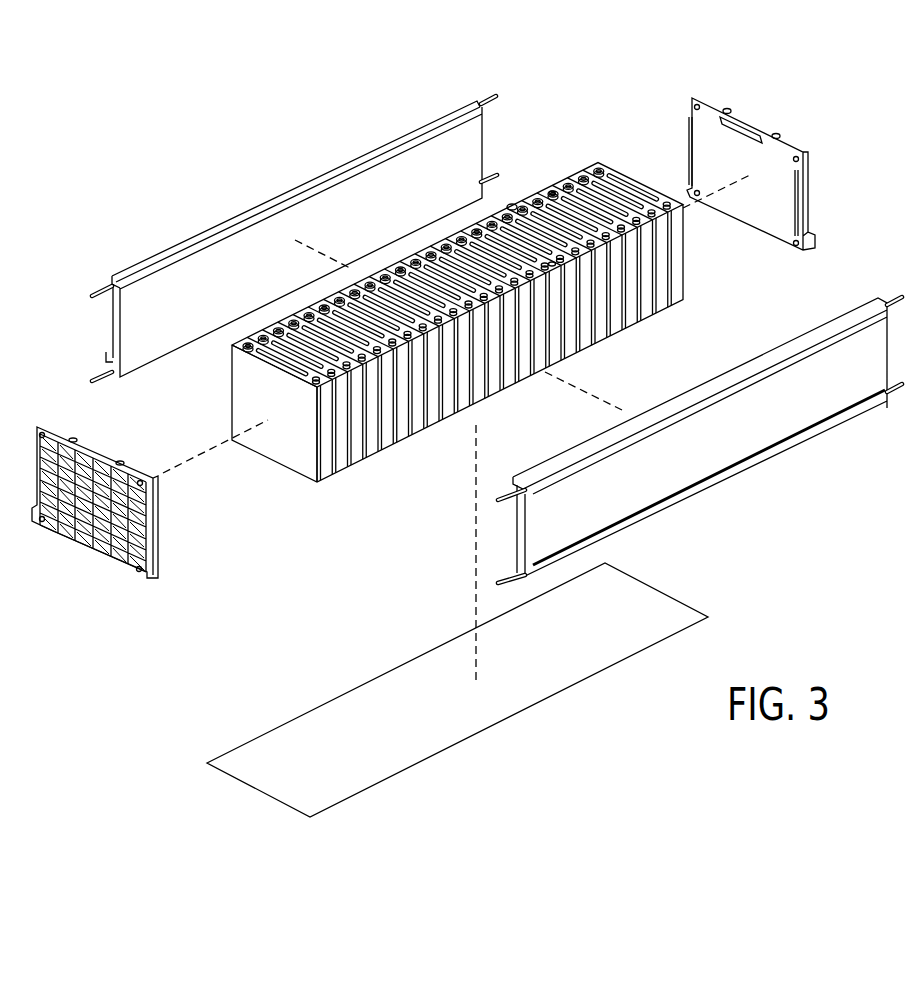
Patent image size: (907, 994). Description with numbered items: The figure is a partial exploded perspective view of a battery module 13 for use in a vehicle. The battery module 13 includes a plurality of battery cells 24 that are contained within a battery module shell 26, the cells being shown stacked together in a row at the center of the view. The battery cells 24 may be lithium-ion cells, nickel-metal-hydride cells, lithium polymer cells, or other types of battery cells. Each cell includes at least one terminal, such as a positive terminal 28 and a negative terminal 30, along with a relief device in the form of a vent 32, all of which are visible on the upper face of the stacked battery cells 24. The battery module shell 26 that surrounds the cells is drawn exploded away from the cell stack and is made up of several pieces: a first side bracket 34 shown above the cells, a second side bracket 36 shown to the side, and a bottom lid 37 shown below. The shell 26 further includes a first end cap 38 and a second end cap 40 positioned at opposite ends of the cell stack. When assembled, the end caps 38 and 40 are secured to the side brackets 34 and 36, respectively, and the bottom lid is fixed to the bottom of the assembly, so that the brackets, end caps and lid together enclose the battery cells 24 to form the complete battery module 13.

The battery module 13 is at (505, 66).
The battery cells 24 is at (613, 185).
The battery module shell 26 is at (357, 122).
The positive terminal 28 is at (512, 203).
The negative terminal 30 is at (555, 262).
The vent 32 is at (553, 190).
The first side bracket 34 is at (275, 203).
The second side bracket 36 is at (762, 462).
The bottom lid 37 is at (277, 744).
The first end cap 38 is at (150, 527).
The second end cap 40 is at (803, 207).